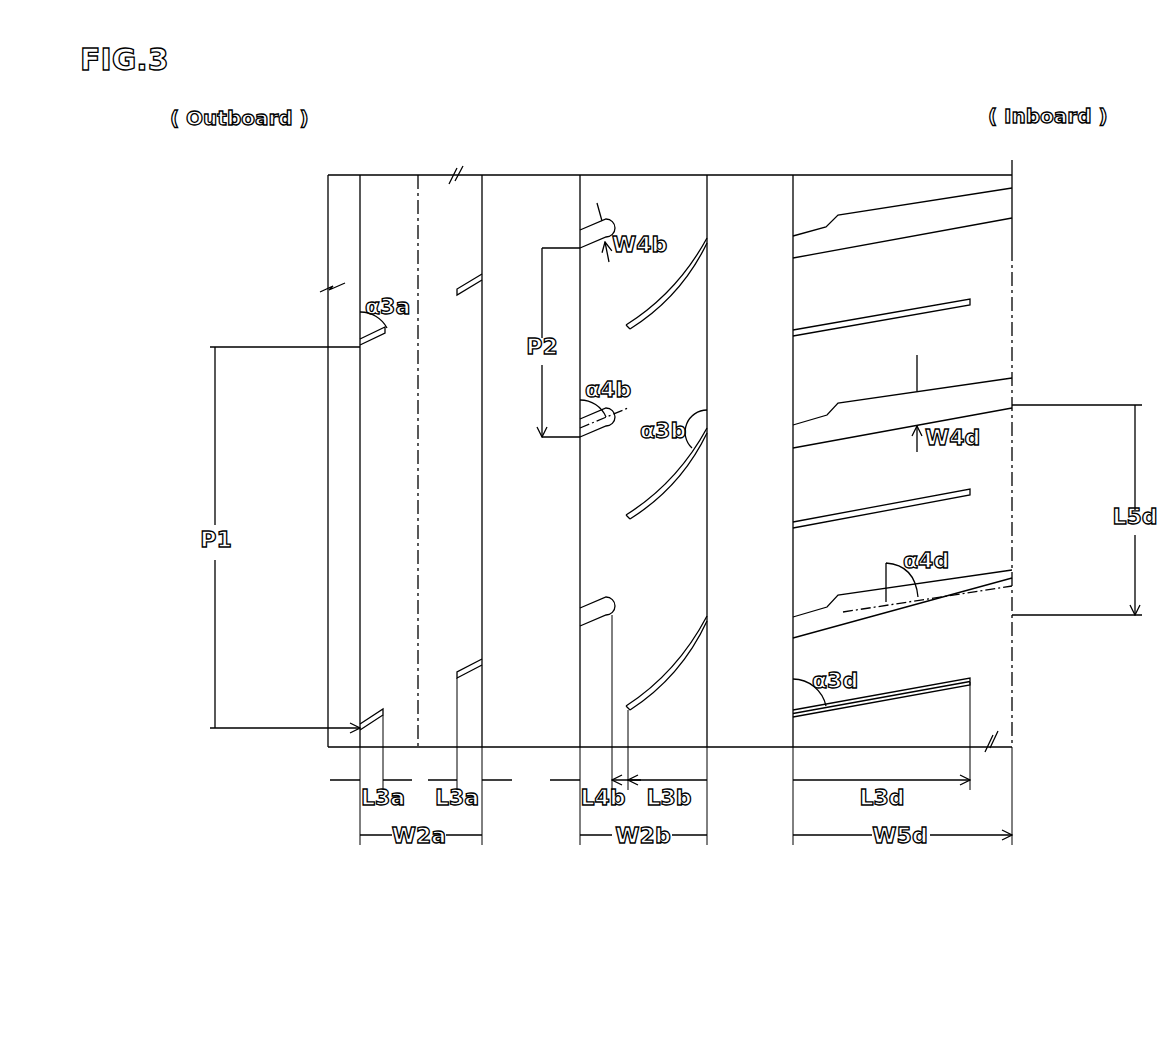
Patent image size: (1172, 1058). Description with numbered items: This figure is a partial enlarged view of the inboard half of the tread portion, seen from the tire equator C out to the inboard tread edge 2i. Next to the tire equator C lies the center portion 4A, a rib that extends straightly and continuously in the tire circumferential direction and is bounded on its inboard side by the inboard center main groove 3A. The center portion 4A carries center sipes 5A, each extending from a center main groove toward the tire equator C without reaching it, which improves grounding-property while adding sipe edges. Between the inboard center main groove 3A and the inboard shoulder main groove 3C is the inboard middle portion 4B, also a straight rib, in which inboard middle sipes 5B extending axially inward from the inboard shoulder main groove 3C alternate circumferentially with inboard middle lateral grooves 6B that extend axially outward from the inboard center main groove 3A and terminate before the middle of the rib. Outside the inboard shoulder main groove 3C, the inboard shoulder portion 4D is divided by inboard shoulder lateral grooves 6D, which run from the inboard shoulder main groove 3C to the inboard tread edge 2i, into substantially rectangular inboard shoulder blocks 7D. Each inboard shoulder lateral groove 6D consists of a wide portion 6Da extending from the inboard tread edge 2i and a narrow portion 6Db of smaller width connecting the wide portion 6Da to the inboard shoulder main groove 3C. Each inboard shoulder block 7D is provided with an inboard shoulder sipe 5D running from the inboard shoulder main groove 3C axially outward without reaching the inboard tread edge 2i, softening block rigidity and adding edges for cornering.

The inboard tread edge 2i is at (1014, 730).
The inboard center main groove 3A is at (527, 215).
The inboard shoulder main groove 3C is at (750, 212).
The center portion 4A is at (394, 210).
The inboard middle portion 4B is at (660, 215).
The inboard shoulder portion 4D is at (843, 212).
The center sipe 5A is at (375, 338).
The inboard middle sipe 5B is at (672, 275).
The inboard shoulder sipe 5D is at (917, 315).
The inboard middle lateral groove 6B is at (600, 216).
The inboard shoulder lateral groove 6D is at (971, 413).
The wide portion 6Da is at (917, 218).
The narrow portion 6Db is at (813, 242).
The inboard shoulder block 7D is at (965, 367).
The tire equator C is at (418, 175).